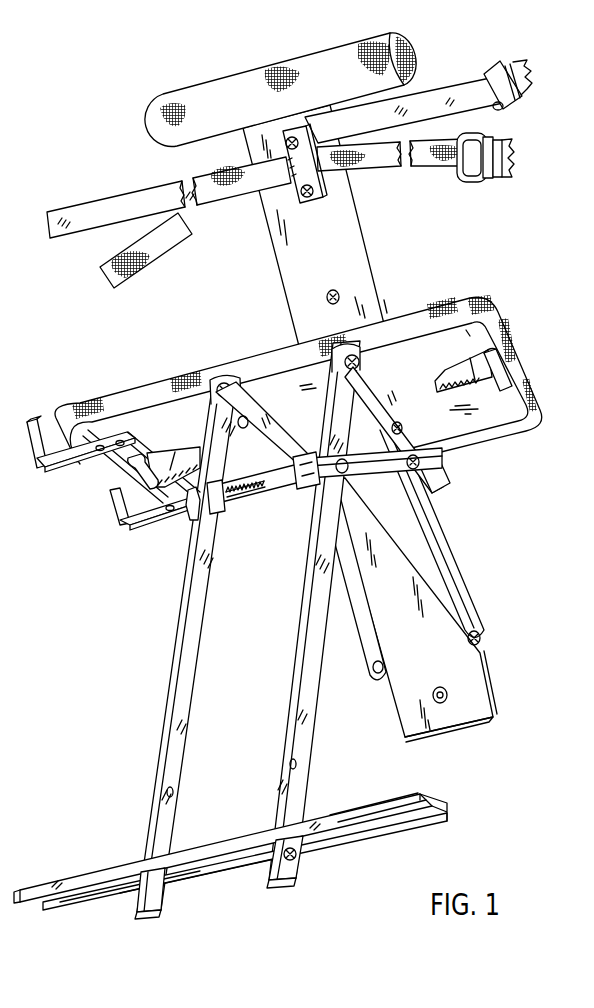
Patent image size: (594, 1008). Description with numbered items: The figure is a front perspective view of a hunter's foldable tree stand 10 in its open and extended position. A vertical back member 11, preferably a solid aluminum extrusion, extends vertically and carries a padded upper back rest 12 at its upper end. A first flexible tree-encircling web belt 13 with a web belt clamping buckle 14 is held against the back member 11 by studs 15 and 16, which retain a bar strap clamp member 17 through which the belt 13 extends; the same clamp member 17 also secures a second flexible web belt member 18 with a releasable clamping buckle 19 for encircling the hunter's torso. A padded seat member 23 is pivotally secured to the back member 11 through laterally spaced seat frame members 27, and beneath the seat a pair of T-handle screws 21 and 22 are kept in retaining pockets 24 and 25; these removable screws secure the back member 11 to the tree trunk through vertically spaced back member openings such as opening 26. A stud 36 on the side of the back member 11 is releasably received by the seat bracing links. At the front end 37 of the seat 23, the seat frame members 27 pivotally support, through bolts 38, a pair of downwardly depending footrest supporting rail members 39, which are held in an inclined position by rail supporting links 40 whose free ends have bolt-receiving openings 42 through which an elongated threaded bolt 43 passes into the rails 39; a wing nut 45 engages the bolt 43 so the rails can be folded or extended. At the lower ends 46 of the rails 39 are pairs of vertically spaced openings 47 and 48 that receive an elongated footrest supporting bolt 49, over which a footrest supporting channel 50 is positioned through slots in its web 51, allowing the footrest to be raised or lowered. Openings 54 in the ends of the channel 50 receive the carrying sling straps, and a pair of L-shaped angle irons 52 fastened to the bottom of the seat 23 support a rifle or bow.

The foldable tree stand 10 is at (400, 297).
The vertical back member 11 is at (331, 281).
The padded upper back rest 12 is at (303, 90).
The first flexible tree-encircling web belt 13 is at (169, 222).
The web belt clamping buckle 14 is at (440, 95).
The stud 15 is at (305, 158).
The stud 16 is at (322, 213).
The bar strap clamp member 17 is at (318, 172).
The second flexible web belt member 18 is at (391, 173).
The releasable clamping buckle 19 is at (508, 157).
The T-handle screw 21 is at (527, 367).
The T-handle screw 22 is at (128, 482).
The padded seat member 23 is at (509, 312).
The retaining pocket 24 is at (462, 368).
The retaining pocket 25 is at (164, 453).
The back member opening 26 is at (374, 281).
The seat frame member 27 is at (335, 535).
The stud 36 is at (422, 584).
The front end 37 is at (298, 379).
The bolt 38 is at (243, 392).
The footrest supporting rail member 39 is at (244, 626).
The rail supporting link 40 is at (327, 477).
The bolt-receiving opening 42 is at (263, 486).
The elongated threaded bolt 43 is at (259, 507).
The wing nut 45 is at (192, 512).
The lower end 46 is at (224, 804).
The opening 47 is at (261, 771).
The opening 48 is at (217, 889).
The elongated footrest supporting bolt 49 is at (245, 869).
The footrest supporting channel 50 is at (223, 848).
The web 51 is at (378, 795).
The L-shaped angle iron 52 is at (108, 484).
The opening 54 is at (460, 804).